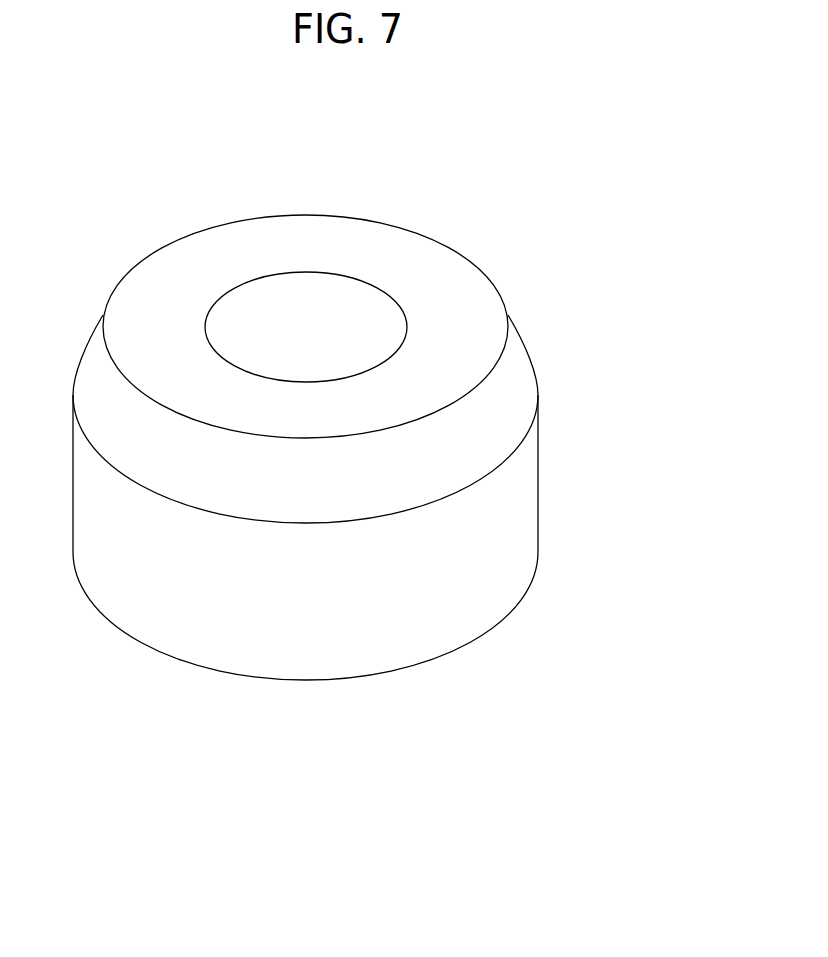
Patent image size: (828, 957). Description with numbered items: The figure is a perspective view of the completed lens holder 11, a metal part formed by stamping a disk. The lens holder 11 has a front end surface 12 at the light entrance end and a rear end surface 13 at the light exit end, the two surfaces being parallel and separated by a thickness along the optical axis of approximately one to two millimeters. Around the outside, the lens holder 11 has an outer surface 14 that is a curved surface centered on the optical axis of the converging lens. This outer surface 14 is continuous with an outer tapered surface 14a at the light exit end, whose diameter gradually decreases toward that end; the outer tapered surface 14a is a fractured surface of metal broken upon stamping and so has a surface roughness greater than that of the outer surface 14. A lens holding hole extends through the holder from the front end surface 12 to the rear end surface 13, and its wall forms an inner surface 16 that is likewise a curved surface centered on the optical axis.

The lens holder 11 is at (556, 279).
The front end surface 12 is at (250, 676).
The rear end surface 13 is at (411, 257).
The outer surface 14 is at (498, 519).
The outer tapered surface 14a is at (518, 388).
The inner surface 16 is at (332, 322).